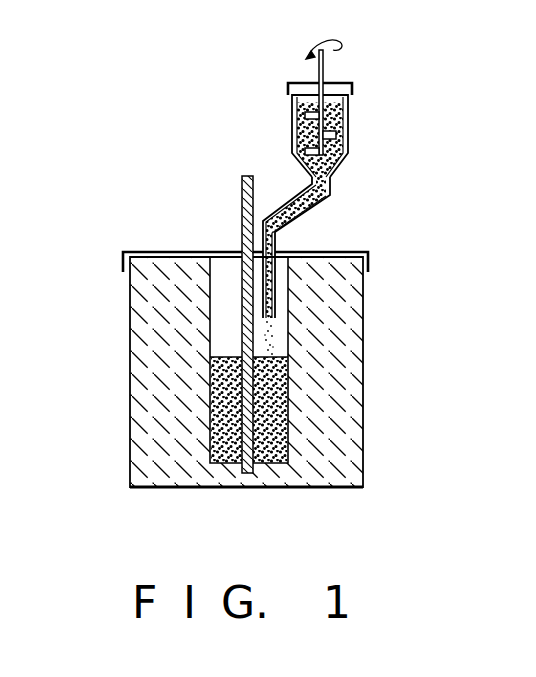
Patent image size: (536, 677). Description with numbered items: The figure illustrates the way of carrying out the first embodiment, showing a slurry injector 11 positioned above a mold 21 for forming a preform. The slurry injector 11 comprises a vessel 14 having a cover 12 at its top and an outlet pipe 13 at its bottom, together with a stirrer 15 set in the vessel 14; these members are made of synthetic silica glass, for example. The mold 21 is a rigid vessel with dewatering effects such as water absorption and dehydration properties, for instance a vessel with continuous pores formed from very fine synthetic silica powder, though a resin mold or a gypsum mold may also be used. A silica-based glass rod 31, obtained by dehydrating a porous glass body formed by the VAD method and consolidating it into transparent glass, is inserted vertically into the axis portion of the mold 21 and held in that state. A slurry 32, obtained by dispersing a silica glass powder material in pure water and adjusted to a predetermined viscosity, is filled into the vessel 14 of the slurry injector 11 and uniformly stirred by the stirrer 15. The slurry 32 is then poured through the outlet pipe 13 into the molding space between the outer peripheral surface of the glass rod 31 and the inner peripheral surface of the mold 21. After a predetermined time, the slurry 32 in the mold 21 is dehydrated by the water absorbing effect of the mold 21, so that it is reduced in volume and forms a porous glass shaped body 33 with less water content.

The slurry injector 11 is at (335, 225).
The cover 12 is at (338, 83).
The outlet pipe 13 is at (331, 197).
The vessel 14 is at (347, 137).
The stirrer 15 is at (319, 74).
The mold 21 is at (131, 393).
The silica-based glass rod 31 is at (242, 218).
The slurry 32 is at (304, 131).
The porous glass shaped body 33 is at (275, 408).